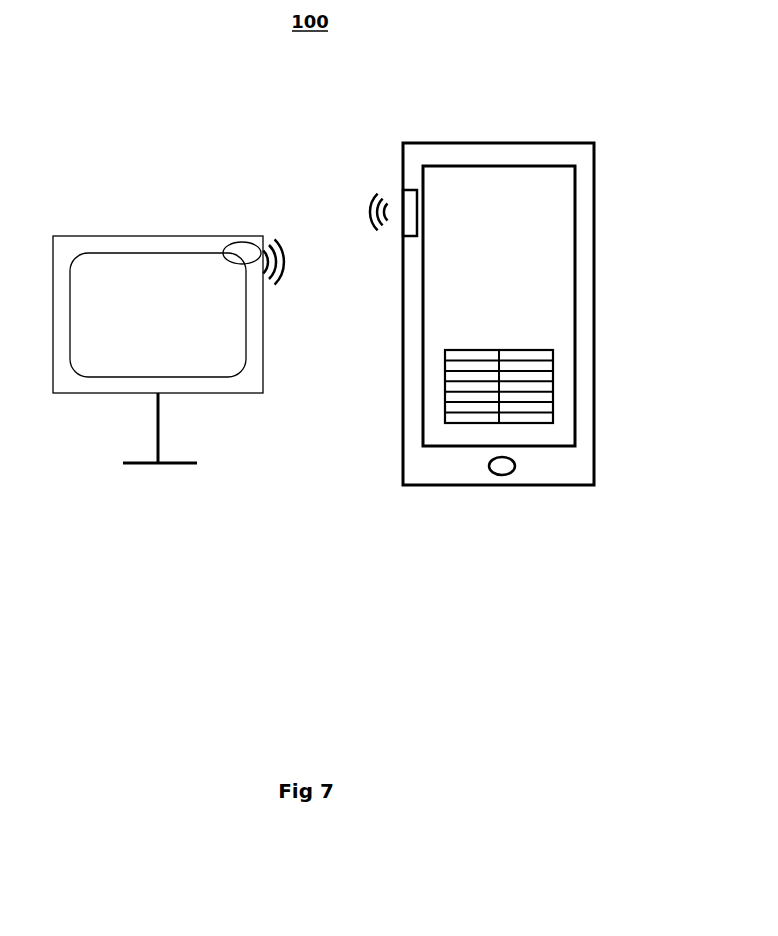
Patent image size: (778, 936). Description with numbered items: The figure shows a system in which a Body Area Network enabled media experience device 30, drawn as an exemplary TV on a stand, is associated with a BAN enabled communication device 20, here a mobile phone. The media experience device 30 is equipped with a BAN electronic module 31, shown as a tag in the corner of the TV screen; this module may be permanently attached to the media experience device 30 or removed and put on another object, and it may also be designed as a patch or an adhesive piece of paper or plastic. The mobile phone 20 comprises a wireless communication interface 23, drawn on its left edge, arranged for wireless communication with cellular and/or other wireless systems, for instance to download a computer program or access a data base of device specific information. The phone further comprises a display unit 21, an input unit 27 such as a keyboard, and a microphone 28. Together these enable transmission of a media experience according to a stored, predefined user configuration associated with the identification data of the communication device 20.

The communication device 20 is at (494, 141).
The display unit 21 is at (565, 196).
The wireless communication interface 23 is at (405, 230).
The input unit 27 is at (555, 384).
The microphone 28 is at (496, 473).
The media experience device 30 is at (88, 405).
The BAN electronic module 31 is at (246, 255).